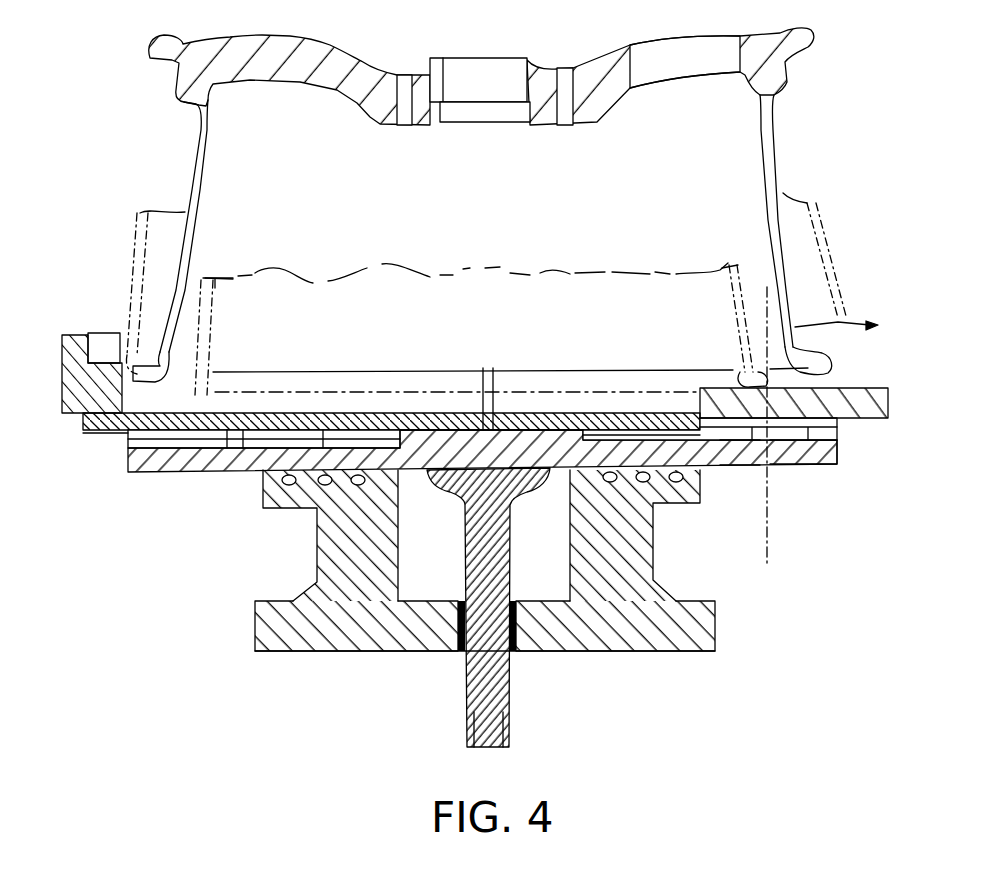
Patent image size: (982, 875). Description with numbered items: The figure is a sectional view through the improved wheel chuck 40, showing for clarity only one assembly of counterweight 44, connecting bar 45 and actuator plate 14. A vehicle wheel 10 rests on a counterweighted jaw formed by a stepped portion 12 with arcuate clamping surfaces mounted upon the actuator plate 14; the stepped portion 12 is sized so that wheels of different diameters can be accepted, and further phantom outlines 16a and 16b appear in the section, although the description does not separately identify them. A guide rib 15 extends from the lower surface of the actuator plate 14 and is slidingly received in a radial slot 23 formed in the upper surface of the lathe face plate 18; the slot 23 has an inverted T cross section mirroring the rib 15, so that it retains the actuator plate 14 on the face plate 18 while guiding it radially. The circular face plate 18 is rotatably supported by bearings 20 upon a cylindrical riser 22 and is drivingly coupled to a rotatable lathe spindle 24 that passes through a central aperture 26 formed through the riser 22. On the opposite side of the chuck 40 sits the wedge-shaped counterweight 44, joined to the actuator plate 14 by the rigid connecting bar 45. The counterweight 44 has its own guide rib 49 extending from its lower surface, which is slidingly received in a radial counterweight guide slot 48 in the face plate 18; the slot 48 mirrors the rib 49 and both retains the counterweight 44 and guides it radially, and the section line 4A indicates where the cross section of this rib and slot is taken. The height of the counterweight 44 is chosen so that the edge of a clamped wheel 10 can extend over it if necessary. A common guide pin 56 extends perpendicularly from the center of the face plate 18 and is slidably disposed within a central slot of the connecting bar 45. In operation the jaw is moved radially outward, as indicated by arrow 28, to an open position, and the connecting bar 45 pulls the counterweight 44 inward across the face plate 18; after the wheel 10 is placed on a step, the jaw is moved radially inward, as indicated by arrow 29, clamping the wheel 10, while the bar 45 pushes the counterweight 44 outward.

The vehicle wheel 10 is at (348, 62).
The stepped portion 12 is at (73, 333).
The actuator plate 14 is at (85, 436).
The guide rib 15 is at (247, 441).
The closure inner portion 16a is at (737, 330).
The closure outer portion 16b is at (807, 201).
The face plate 18 is at (734, 450).
The bearings 20 is at (365, 486).
The cylindrical riser 22 is at (642, 546).
The radial slot 23 is at (398, 429).
The lathe spindle 24 is at (512, 697).
The central aperture 26 is at (446, 661).
The outward radial direction arrow 28 is at (70, 251).
The inward radial direction arrow 29 is at (105, 203).
The wheel chuck 40 is at (143, 527).
The counterweight 44 is at (833, 392).
The connecting bar 45 is at (548, 419).
The counterweight guide slot 48 is at (820, 430).
The counterweight guide rib 49 is at (782, 442).
The guide pin 56 is at (484, 369).
The section line 4A is at (722, 305).